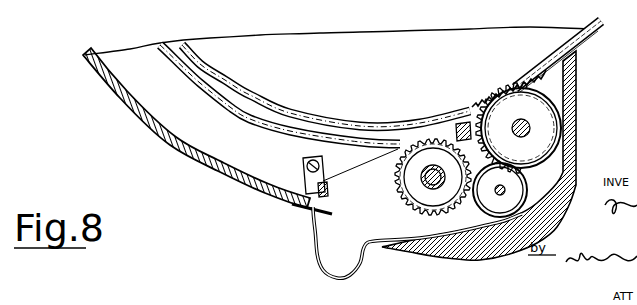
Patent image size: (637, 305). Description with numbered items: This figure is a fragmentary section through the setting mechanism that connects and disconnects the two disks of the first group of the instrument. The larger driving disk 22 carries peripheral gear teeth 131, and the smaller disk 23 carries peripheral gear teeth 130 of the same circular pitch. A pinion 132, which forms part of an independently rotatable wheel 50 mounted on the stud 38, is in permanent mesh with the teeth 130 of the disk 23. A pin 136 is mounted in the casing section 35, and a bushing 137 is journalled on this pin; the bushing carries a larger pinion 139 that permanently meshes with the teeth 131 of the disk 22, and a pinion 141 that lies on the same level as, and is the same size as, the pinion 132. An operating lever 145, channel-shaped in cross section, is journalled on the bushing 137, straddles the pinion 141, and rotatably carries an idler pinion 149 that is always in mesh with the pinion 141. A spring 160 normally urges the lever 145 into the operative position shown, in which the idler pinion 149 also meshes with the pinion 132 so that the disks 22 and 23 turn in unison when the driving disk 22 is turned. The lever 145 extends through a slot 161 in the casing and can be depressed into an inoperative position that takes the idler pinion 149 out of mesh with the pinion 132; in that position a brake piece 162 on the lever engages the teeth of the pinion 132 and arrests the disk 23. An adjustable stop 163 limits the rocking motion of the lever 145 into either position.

The disk 22 is at (590, 37).
The disk 23 is at (583, 53).
The casing section 35 is at (168, 146).
The stud 38 is at (534, 124).
The wheel 50 is at (552, 99).
The peripheral gear teeth 130 is at (533, 77).
The peripheral gear teeth 131 is at (400, 149).
The pinion 132 is at (546, 128).
The pin 136 is at (432, 184).
The bushing 137 is at (425, 186).
The pinion 139 is at (399, 168).
The pinion 141 is at (405, 186).
The operating lever 145 is at (321, 254).
The idler pinion 149 is at (512, 190).
The spring 160 is at (306, 186).
The slot 161 is at (320, 214).
The brake piece 162 is at (463, 122).
The stop 163 is at (329, 191).